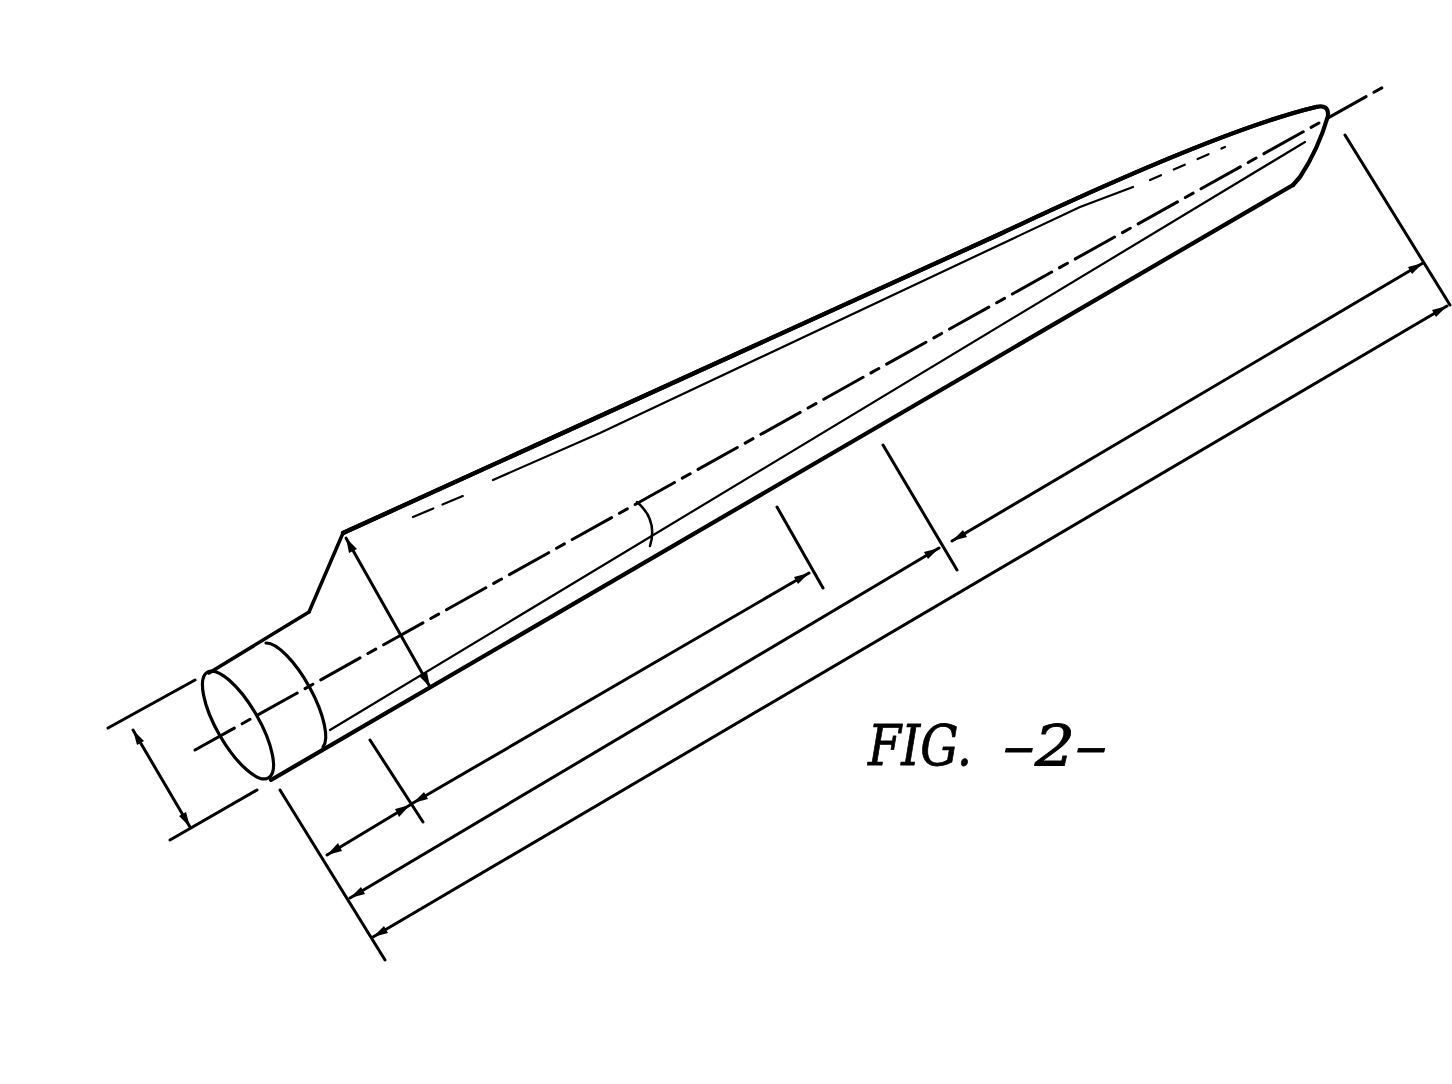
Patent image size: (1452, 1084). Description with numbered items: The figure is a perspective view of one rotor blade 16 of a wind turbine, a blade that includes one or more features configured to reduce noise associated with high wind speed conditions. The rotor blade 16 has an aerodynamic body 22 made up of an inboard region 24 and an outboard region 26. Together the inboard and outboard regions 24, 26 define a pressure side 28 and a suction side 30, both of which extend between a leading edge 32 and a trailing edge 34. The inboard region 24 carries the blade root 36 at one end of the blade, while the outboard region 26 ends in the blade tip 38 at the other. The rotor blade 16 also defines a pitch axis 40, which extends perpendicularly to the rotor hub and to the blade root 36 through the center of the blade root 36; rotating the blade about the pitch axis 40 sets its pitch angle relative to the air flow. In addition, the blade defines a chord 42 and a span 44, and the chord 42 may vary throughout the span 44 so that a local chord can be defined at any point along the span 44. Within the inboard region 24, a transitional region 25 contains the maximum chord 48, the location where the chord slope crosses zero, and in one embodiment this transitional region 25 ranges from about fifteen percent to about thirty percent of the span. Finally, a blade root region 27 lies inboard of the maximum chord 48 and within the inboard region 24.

The rotor blade 16 is at (450, 336).
The aerodynamic body 22 is at (817, 360).
The inboard region 24 is at (877, 583).
The transitional region 25 is at (555, 718).
The outboard region 26 is at (1218, 384).
The blade root region 27 is at (365, 830).
The pressure side 28 is at (688, 417).
The suction side 30 is at (483, 505).
The leading edge 32 is at (570, 608).
The trailing edge 34 is at (1060, 203).
The blade root 36 is at (231, 656).
The blade tip 38 is at (1328, 110).
The pitch axis 40 is at (652, 548).
The chord 42 is at (153, 767).
The span 44 is at (1113, 505).
The maximum chord 48 is at (368, 582).